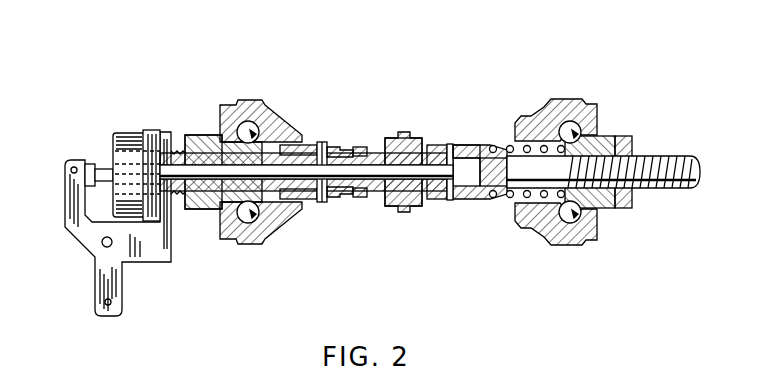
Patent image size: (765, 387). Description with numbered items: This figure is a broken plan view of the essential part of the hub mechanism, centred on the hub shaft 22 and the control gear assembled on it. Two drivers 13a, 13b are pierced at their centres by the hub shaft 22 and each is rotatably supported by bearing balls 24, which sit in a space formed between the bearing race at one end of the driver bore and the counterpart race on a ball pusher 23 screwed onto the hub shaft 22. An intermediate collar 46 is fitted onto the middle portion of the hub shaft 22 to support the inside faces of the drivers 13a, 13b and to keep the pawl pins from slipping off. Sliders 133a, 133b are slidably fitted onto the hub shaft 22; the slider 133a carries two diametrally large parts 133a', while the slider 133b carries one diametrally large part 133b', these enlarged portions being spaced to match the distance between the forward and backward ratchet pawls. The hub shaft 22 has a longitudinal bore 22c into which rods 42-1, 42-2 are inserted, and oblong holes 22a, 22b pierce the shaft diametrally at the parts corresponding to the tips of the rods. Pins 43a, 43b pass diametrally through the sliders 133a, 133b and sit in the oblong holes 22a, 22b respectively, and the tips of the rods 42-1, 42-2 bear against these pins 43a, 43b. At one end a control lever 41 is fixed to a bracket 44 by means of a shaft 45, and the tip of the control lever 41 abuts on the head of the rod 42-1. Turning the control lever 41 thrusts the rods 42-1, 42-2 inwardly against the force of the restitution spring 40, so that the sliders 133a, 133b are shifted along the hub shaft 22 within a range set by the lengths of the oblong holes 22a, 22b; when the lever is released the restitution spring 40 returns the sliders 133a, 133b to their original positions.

The driver 13a is at (229, 103).
The driver 13b is at (566, 100).
The hub shaft 22 is at (665, 192).
The oblong hole 22a is at (333, 203).
The oblong hole 22b is at (462, 182).
The longitudinal bore 22c is at (262, 205).
The ball pusher 23 is at (205, 133).
The bearing balls 24 is at (250, 222).
The restitution spring 40 is at (500, 198).
The control lever 41 is at (72, 160).
The rod 42-1 is at (210, 210).
The rod 42-2 is at (398, 212).
The pin 43a is at (320, 142).
The pin 43b is at (449, 144).
The bracket 44 is at (140, 270).
The shaft 45 is at (100, 250).
The intermediate collar 46 is at (401, 133).
The slider 133a is at (356, 215).
The diametrally large parts 133a' is at (357, 137).
The slider 133b is at (479, 230).
The diametrally large part 133b' is at (483, 109).